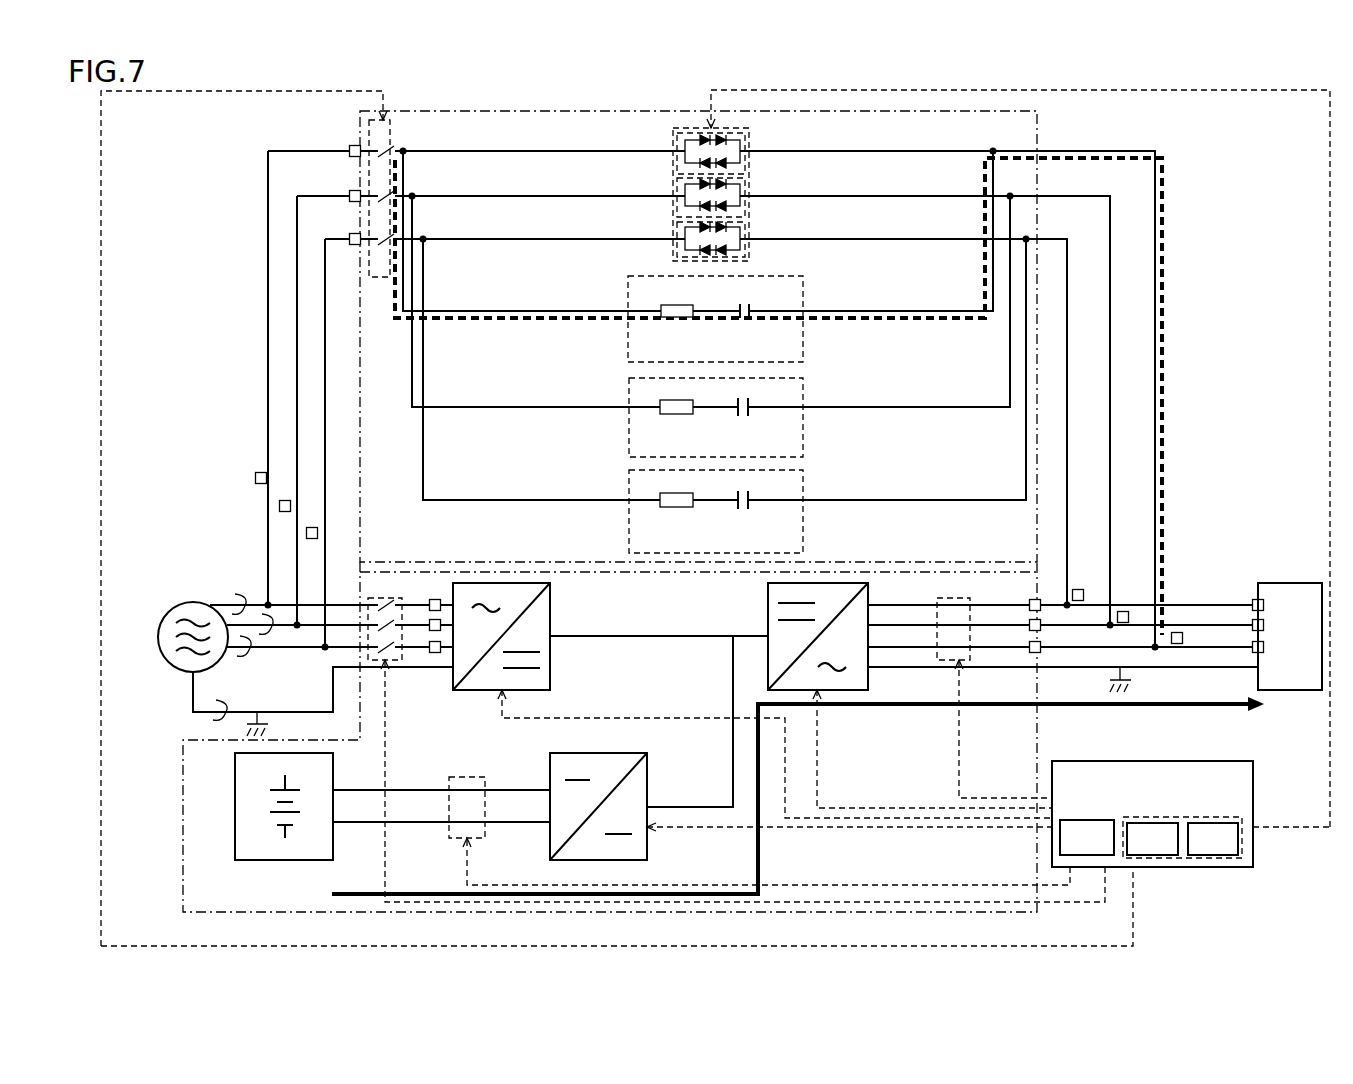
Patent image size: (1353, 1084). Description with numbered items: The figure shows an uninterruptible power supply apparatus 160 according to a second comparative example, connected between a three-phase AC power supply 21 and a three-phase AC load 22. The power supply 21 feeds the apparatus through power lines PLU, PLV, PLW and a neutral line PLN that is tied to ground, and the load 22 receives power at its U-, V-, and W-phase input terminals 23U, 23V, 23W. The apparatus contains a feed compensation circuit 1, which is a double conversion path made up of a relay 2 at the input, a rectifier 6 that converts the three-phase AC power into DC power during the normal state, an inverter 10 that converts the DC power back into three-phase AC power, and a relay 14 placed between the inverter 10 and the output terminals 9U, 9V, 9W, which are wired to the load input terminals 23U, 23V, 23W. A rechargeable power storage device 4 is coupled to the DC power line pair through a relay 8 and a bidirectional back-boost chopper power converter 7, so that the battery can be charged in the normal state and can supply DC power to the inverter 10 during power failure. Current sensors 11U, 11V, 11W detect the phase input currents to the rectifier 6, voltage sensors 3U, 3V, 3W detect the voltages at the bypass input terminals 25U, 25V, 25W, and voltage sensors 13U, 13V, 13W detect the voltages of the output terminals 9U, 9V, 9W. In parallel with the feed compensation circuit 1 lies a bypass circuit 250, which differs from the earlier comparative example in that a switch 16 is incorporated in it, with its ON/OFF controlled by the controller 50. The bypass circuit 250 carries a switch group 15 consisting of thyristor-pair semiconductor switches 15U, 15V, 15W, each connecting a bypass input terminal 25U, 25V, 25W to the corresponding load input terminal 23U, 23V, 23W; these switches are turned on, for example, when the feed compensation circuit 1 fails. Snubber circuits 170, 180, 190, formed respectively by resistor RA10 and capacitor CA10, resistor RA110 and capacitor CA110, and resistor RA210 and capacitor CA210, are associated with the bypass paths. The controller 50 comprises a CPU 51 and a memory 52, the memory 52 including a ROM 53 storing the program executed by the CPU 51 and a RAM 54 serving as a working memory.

The feed compensation circuit 1 is at (620, 918).
The relay 2 is at (385, 617).
The power storage device 4 is at (235, 810).
The rectifier 6 is at (550, 632).
The power converter 7 is at (615, 862).
The relay 8 is at (465, 777).
The inverter 10 is at (868, 604).
The relay 14 is at (965, 596).
The switch group 15 is at (672, 143).
The switch 15U is at (747, 142).
The switch 15V is at (747, 188).
The switch 15W is at (747, 231).
The switch 16 is at (378, 277).
The power supply 21 is at (158, 637).
The load 22 is at (1290, 583).
The controller 50 is at (1198, 868).
The CPU 51 is at (1082, 820).
The memory 52 is at (1196, 815).
The ROM 53 is at (1147, 823).
The RAM 54 is at (1208, 823).
The uninterruptible power supply apparatus 160 is at (355, 86).
The snubber circuit 170 is at (803, 300).
The snubber circuit 180 is at (806, 432).
The snubber circuit 190 is at (806, 535).
The bypass circuit 250 is at (1040, 147).
The voltage sensor 3U is at (255, 478).
The voltage sensor 3V is at (279, 505).
The voltage sensor 3W is at (306, 533).
The output terminal 9U is at (1029, 645).
The output terminal 9V is at (1029, 623).
The output terminal 9W is at (1029, 603).
The current sensor 11U is at (435, 599).
The current sensor 11V is at (432, 631).
The current sensor 11W is at (436, 653).
The voltage sensor 13U is at (1080, 589).
The voltage sensor 13V is at (1125, 611).
The voltage sensor 13W is at (1179, 632).
The U-phase input terminal 23U is at (1252, 645).
The V-phase input terminal 23V is at (1252, 623).
The W-phase input terminal 23W is at (1252, 602).
The input terminal 25U is at (351, 145).
The input terminal 25V is at (351, 190).
The input terminal 25W is at (351, 233).
The resistor RA10 is at (674, 326).
The capacitor CA10 is at (744, 325).
The resistor RA110 is at (677, 420).
The capacitor CA110 is at (755, 419).
The resistor RA210 is at (677, 514).
The capacitor CA210 is at (755, 513).
The power line PLU is at (243, 594).
The power line PLV is at (268, 636).
The power line PLW is at (246, 658).
The neutral line PLN is at (213, 722).